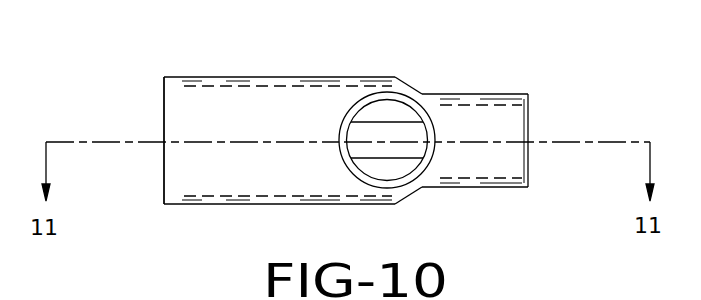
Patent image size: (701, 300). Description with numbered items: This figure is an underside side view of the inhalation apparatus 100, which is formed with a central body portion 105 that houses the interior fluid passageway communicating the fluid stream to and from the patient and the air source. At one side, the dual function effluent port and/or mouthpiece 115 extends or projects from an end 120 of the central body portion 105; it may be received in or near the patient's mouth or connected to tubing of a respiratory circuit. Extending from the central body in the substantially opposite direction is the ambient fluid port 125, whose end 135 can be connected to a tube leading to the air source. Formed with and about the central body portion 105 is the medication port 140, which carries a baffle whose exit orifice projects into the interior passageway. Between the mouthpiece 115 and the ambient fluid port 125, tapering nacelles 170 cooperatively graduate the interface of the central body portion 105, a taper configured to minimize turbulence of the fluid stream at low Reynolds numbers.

The inhalation apparatus 100 is at (241, 78).
The central body portion 105 is at (330, 77).
The dual function effluent port and/or mouthpiece 115 is at (177, 205).
The end of the central body 120 is at (217, 205).
The ambient fluid port 125 is at (482, 188).
The end of the ambient fluid port 135 is at (500, 189).
The medication port 140 is at (425, 115).
The tapering nacelles 170 is at (413, 88).